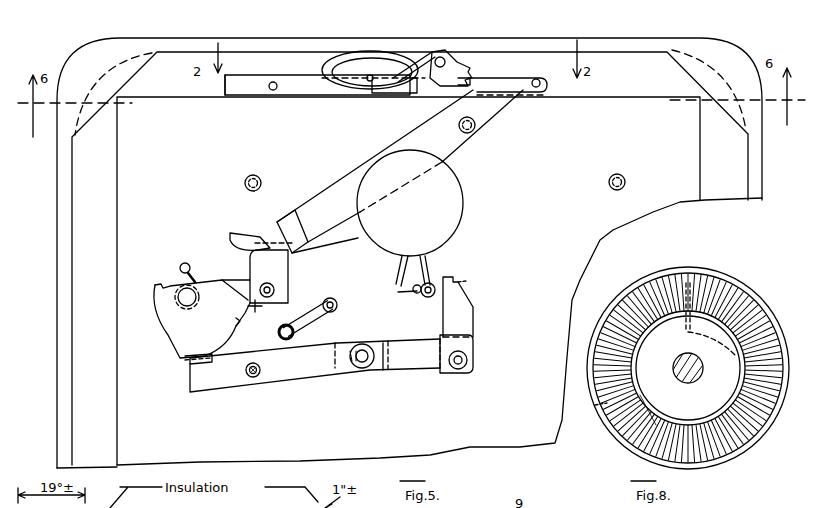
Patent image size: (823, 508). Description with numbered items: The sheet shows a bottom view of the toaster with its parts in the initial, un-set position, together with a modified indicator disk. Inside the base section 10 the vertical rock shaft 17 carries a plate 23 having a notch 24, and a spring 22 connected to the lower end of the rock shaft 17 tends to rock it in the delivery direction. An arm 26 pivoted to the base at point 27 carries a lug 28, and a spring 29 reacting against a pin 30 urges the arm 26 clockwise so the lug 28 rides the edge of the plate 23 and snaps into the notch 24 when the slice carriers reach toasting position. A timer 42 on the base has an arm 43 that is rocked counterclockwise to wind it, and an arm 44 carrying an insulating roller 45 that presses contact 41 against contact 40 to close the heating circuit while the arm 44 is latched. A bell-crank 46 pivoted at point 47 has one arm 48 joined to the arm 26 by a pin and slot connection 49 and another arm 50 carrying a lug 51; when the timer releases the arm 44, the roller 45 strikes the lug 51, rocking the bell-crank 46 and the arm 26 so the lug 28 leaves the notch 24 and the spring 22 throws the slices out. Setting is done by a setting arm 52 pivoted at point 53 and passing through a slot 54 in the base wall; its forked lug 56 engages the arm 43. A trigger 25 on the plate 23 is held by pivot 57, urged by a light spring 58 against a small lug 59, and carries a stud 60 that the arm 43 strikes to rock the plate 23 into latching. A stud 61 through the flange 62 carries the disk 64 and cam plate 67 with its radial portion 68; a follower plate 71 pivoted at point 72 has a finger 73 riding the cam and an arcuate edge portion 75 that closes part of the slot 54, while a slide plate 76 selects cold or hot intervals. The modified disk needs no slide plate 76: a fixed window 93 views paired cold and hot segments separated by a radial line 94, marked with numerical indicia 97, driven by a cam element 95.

In FIG. 5, the base section 10 is at (51, 357).
In FIG. 5, the rock shaft 17 is at (182, 304).
In FIG. 5, the spring 22 is at (178, 320).
In FIG. 5, the plate 23 is at (202, 319).
In FIG. 5, the notch 24 is at (239, 325).
In FIG. 5, the trigger 25 is at (278, 271).
In FIG. 5, the arm 26 is at (287, 372).
In FIG. 5, the pivot point 27 is at (253, 378).
In FIG. 5, the lug 28 is at (190, 360).
In FIG. 5, the spring 29 is at (311, 320).
In FIG. 5, the pin 30 is at (338, 306).
In FIG. 5, the contact 40 is at (398, 296).
In FIG. 5, the contact 41 is at (412, 297).
In FIG. 5, the timer 42 is at (410, 203).
In FIG. 5, the timer arm 43 is at (318, 248).
In FIG. 5, the timer arm 44 is at (427, 266).
In FIG. 5, the insulating roller 45 is at (426, 298).
In FIG. 5, the bell-crank 46 is at (426, 384).
In FIG. 5, the pivot point 47 is at (468, 360).
In FIG. 5, the bell-crank arm 48 is at (400, 363).
In FIG. 5, the pin and slot connection 49 is at (360, 369).
In FIG. 5, the bell-crank arm 50 is at (460, 313).
In FIG. 5, the lug 51 is at (466, 283).
In FIG. 5, the setting arm 52 is at (412, 128).
In FIG. 5, the pivot point 53 is at (476, 125).
In FIG. 5, the slot 54 is at (540, 86).
In FIG. 5, the forked lug 56 is at (276, 224).
In FIG. 5, the pivot 57 is at (275, 291).
In FIG. 5, the light spring 58 is at (246, 282).
In FIG. 5, the small lug 59 is at (262, 308).
In FIG. 5, the trigger stud 60 is at (257, 244).
In FIG. 5, the rock shaft or stud 61 is at (364, 81).
In FIG. 8, the rock shaft or stud 61 is at (676, 375).
In FIG. 5, the flange 62 is at (292, 76).
In FIG. 5, the indicator disk 64 is at (404, 63).
In FIG. 8, the indicator disk 64 is at (622, 434).
In FIG. 5, the cam plate 67 is at (357, 67).
In FIG. 5, the radial portion 68 is at (371, 82).
In FIG. 5, the follower plate 71 is at (446, 72).
In FIG. 5, the pivotal point 72 is at (440, 57).
In FIG. 5, the finger 73 is at (376, 84).
In FIG. 5, the arcuate edge portion 75 is at (465, 79).
In FIG. 5, the slide plate 76 is at (245, 88).
In FIG. 8, the window opening 93 is at (692, 285).
In FIG. 8, the radial line 94 is at (722, 284).
In FIG. 8, the cam element 95 is at (717, 345).
In FIG. 8, the numerical indicia 97 is at (760, 436).